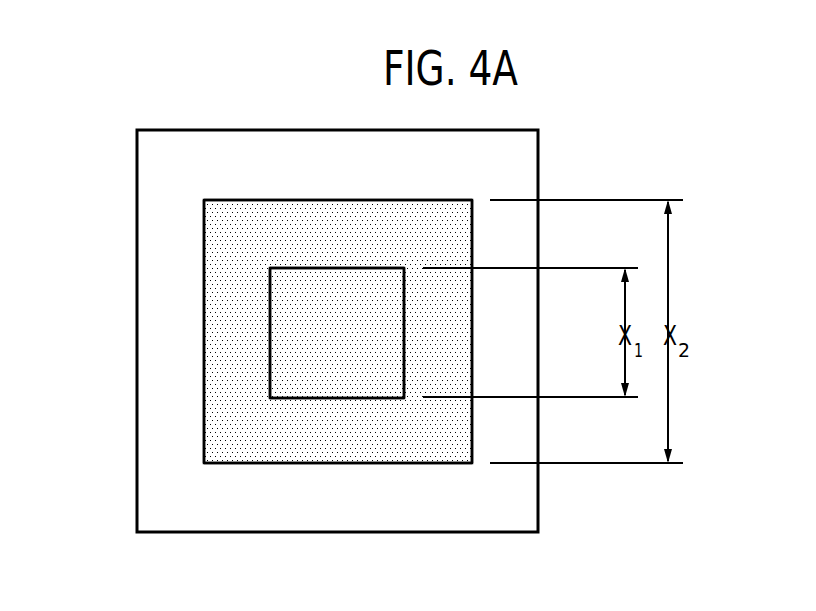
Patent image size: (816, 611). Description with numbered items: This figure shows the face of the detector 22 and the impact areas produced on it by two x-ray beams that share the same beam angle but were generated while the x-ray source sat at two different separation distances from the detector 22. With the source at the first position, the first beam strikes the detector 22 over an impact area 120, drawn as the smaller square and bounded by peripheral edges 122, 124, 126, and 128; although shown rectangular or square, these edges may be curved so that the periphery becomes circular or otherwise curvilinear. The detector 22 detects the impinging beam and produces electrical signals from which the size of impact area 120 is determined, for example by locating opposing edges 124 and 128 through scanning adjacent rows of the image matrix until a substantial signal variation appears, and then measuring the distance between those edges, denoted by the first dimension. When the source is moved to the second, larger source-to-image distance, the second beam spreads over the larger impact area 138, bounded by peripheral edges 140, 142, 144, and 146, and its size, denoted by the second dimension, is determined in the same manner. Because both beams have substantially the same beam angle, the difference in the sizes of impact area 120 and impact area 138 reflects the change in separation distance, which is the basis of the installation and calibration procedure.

The detector 22 is at (137, 233).
The impact area 120 is at (288, 373).
The peripheral edge 122 is at (268, 337).
The peripheral edge 124 is at (335, 267).
The peripheral edge 126 is at (407, 333).
The peripheral edge 128 is at (338, 400).
The impact area 138 is at (245, 227).
The peripheral edge 140 is at (202, 337).
The peripheral edge 142 is at (337, 197).
The peripheral edge 144 is at (472, 334).
The peripheral edge 146 is at (333, 466).